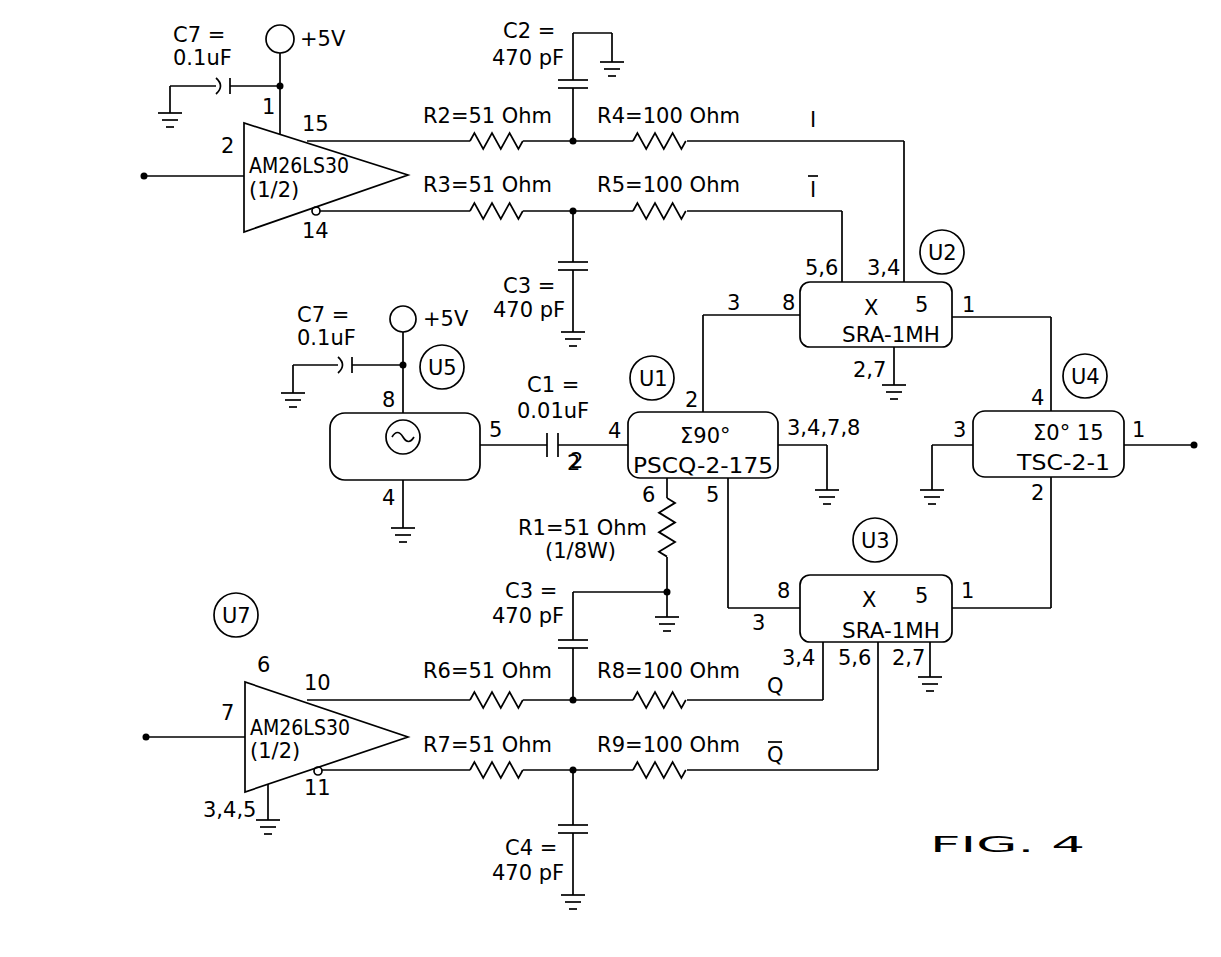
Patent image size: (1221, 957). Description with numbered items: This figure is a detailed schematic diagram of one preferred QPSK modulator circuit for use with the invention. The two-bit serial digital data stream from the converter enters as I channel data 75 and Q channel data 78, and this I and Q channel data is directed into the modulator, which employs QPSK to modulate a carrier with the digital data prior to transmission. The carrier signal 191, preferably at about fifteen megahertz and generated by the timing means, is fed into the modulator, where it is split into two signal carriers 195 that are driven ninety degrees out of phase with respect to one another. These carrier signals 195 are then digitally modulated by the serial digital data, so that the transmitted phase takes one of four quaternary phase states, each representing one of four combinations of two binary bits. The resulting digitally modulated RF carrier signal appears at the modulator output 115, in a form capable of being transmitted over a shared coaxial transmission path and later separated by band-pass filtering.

The I channel data 75 is at (144, 180).
The Q channel data 78 is at (146, 741).
The carrier signal 191 is at (492, 452).
The signal carriers 195 is at (713, 316).
The modulated output signal 115 is at (1145, 445).